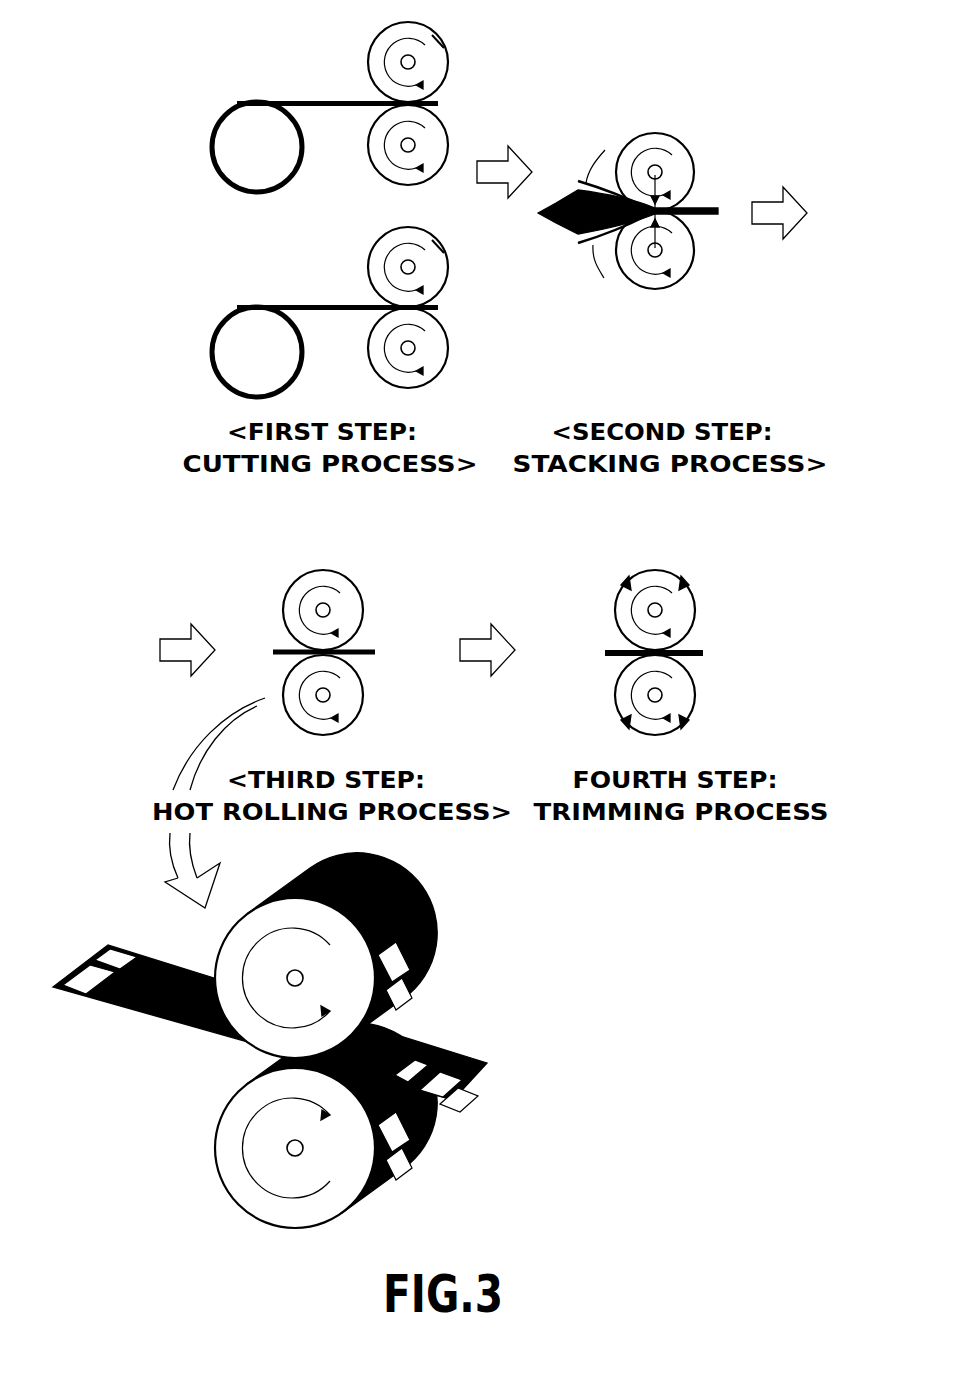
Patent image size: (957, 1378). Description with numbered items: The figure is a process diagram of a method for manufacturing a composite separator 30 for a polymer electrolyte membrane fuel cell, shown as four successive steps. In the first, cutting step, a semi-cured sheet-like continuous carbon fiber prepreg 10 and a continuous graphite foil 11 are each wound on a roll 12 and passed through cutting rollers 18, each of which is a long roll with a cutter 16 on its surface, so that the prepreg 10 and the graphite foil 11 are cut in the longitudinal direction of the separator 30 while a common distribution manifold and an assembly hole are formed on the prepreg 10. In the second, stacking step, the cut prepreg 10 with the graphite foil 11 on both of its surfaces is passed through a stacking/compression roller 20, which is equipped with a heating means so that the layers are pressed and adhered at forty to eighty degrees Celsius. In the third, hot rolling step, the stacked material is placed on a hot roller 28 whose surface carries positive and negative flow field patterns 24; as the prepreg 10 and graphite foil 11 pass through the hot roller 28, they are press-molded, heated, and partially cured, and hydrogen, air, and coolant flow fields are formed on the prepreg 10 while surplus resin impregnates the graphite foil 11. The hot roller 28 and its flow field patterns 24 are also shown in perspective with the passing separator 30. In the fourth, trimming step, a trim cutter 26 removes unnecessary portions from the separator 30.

The continuous carbon fiber prepreg 10 is at (342, 98).
The graphite foil 11 is at (342, 302).
The roll 12 is at (242, 122).
The cutter 16 is at (448, 62).
The cutting roller 18 is at (437, 42).
The stacking/compression roller 20 is at (690, 152).
The positive and negative flow field patterns 24 is at (419, 881).
The trim cutter 26 is at (692, 618).
The hot roller 28 is at (419, 902).
The separator 30 is at (372, 652).